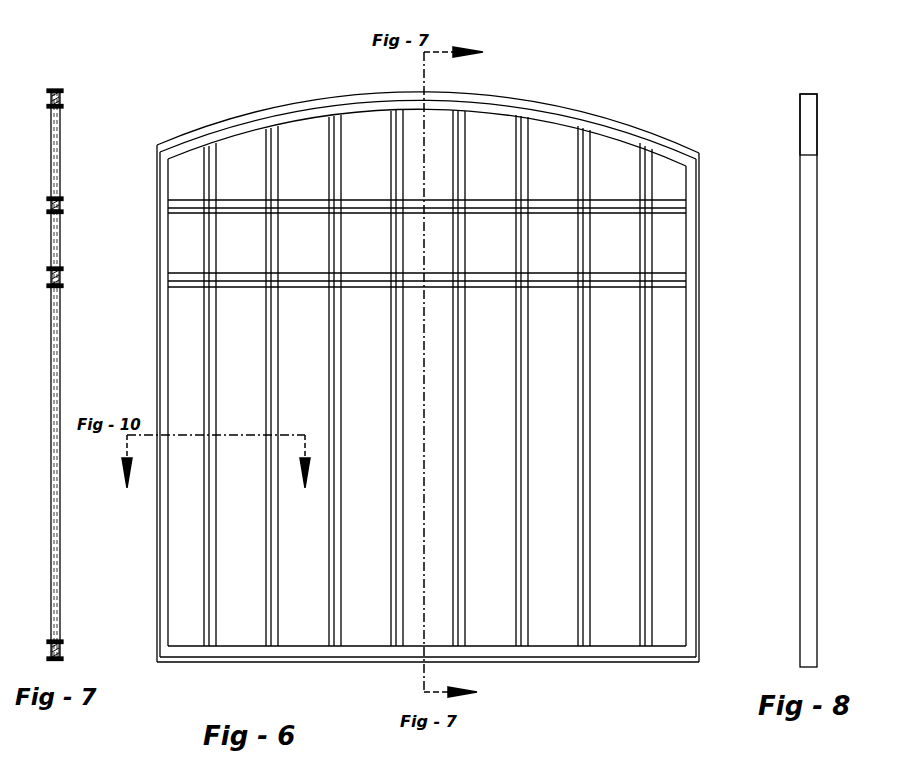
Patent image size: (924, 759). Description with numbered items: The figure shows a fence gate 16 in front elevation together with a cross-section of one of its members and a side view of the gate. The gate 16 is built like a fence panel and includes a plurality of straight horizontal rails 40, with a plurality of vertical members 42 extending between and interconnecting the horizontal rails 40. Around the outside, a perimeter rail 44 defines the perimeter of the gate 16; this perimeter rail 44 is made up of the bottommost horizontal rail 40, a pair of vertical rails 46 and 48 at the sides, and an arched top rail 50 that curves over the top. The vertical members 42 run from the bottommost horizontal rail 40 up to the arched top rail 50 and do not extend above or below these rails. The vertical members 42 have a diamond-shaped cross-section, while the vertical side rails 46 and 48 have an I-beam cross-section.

In FIG. 6, the gate 16 is at (624, 63).
In FIG. 6, the horizontal rails 40 is at (486, 203).
In FIG. 6, the vertical members 42 is at (515, 547).
In FIG. 6, the perimeter rail 44 is at (706, 246).
In FIG. 6, the vertical rail 46 is at (163, 325).
In FIG. 6, the vertical rail 48 is at (690, 405).
In FIG. 8, the vertical rail 48 is at (805, 292).
In FIG. 6, the arched top rail 50 is at (627, 137).
In FIG. 8, the arched top rail 50 is at (807, 105).